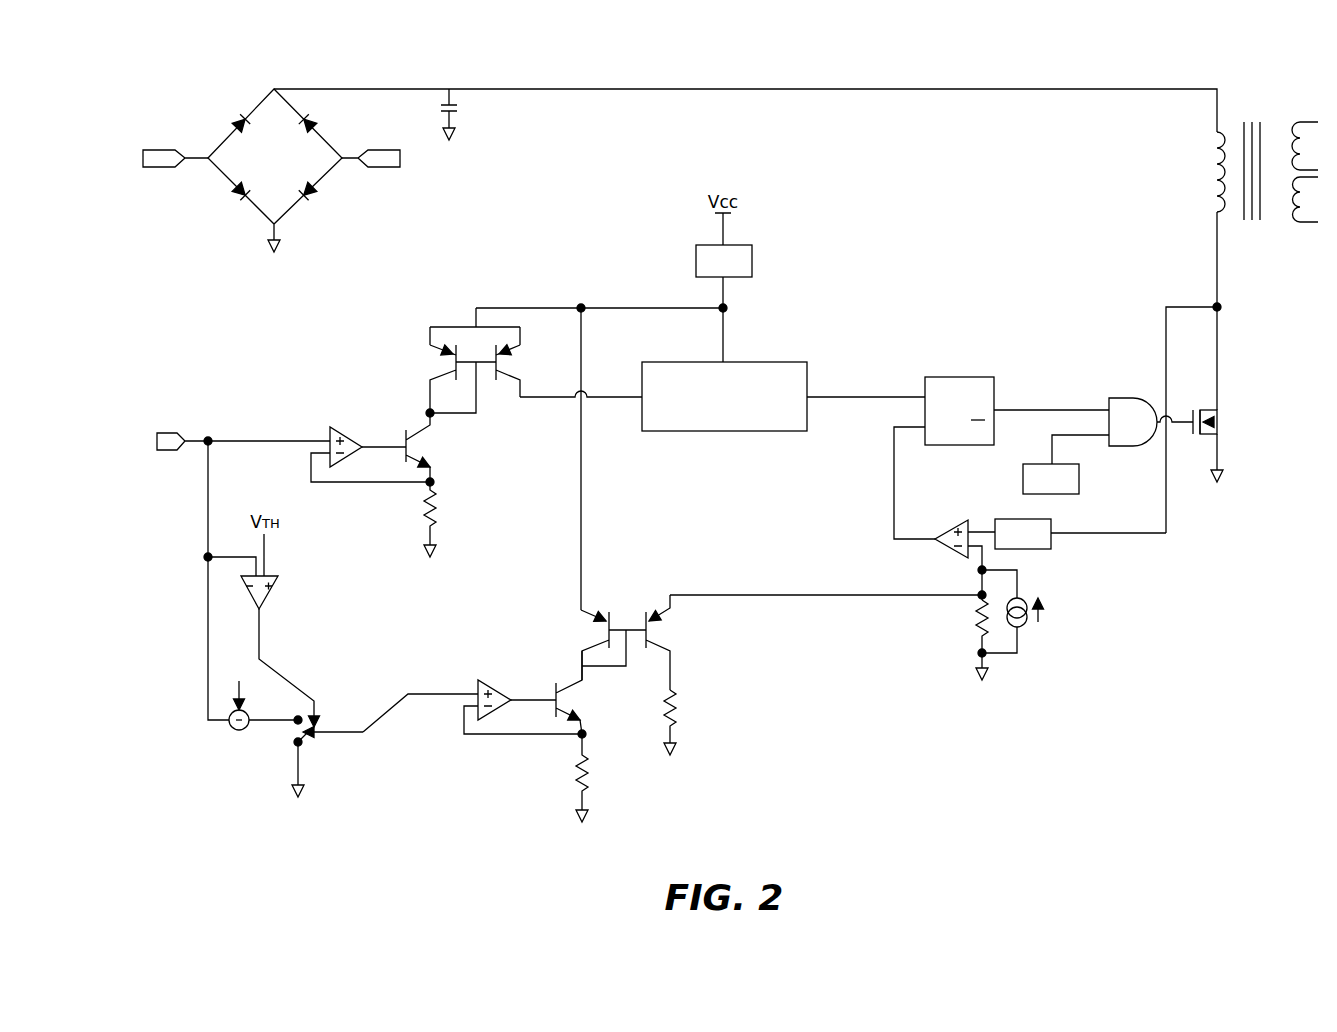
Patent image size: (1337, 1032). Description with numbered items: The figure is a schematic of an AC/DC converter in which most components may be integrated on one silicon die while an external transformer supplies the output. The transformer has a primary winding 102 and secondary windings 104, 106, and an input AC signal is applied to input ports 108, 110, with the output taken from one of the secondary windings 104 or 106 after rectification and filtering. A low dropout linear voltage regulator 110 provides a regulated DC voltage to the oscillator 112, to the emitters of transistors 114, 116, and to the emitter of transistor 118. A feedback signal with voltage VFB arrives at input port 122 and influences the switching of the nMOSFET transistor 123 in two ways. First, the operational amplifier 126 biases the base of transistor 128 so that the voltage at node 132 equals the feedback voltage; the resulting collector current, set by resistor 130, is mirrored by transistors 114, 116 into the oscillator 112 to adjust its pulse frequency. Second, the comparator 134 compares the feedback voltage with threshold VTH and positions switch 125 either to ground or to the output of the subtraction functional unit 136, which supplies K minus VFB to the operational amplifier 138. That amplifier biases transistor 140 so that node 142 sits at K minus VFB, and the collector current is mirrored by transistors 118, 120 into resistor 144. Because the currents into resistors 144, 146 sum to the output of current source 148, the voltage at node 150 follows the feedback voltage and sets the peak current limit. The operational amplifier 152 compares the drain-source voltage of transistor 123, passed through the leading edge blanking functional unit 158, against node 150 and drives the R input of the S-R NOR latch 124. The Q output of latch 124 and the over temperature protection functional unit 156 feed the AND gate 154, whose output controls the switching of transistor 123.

The primary winding 102 is at (1210, 152).
The secondary winding 104 is at (1292, 122).
The secondary winding 106 is at (1292, 222).
The input port 108 is at (165, 150).
The input port / low dropout linear voltage regulator 110 is at (388, 168).
The oscillator 112 is at (782, 362).
The transistor 114 is at (447, 372).
The transistor 116 is at (508, 382).
The transistor 118 is at (598, 630).
The transistor 120 is at (658, 635).
The input port 122 is at (162, 432).
The transistor 123 is at (1215, 410).
The S-R NOR latch 124 is at (975, 377).
The switch 125 is at (312, 746).
The operational amplifier 126 is at (343, 427).
The transistor 128 is at (425, 438).
The resistor 130 is at (425, 520).
The node 132 is at (435, 483).
The comparator 134 is at (272, 586).
The subtraction functional unit 136 is at (232, 731).
The operational amplifier 138 is at (484, 680).
The transistor 140 is at (573, 712).
The node 142 is at (588, 740).
The resistor 144 is at (690, 712).
The resistor 146 is at (975, 645).
The current source 148 is at (1025, 628).
The node 150 is at (975, 570).
The operational amplifier 152 is at (955, 520).
The AND gate 154 is at (1120, 398).
The Over Temperature Protection functional unit 156 is at (1079, 484).
The Leading Edge Blanking functional unit 158 is at (1040, 549).